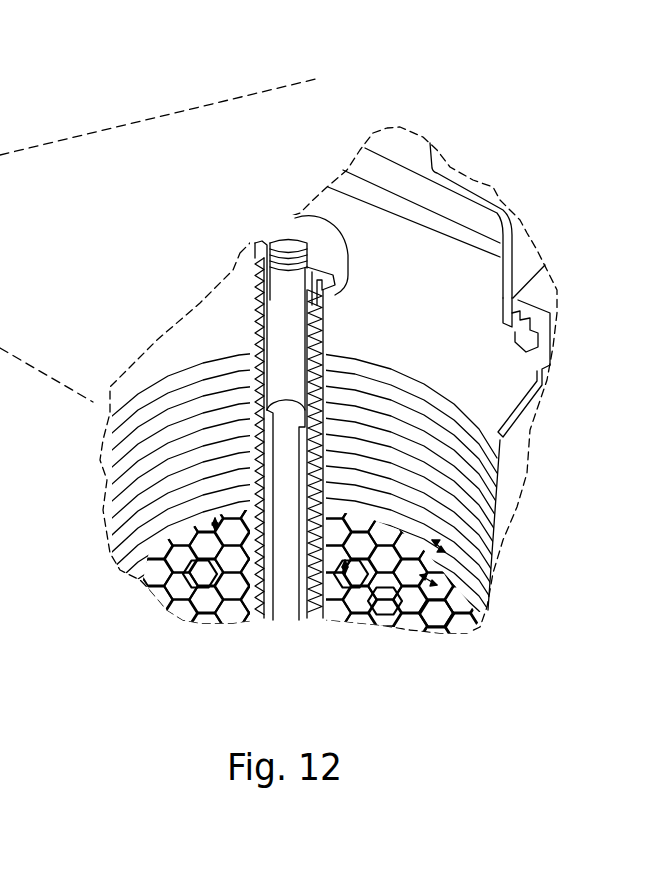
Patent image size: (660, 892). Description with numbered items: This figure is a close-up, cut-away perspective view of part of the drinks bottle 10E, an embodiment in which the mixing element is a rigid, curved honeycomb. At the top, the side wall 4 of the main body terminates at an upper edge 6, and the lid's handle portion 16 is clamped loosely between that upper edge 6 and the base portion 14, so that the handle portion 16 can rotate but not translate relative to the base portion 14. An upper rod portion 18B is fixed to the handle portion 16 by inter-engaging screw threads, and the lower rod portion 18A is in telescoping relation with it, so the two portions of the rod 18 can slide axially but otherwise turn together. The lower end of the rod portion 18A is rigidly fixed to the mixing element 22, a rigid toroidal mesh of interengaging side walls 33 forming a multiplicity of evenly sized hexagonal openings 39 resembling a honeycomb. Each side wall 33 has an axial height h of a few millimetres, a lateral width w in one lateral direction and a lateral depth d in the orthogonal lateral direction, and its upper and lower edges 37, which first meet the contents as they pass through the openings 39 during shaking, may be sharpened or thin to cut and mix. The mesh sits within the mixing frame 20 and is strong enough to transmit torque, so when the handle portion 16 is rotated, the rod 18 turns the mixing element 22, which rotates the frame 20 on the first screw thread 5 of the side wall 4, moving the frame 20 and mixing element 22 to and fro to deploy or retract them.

The drinks bottle 10E is at (532, 172).
The handle portion 16 is at (520, 235).
The upper edge 6 is at (432, 205).
The rod 18 is at (443, 347).
The lower rod portion 18A is at (288, 482).
The upper rod portion 18B is at (307, 338).
The base portion 14 is at (548, 328).
The side wall 4 is at (515, 448).
The first screw thread 5 is at (468, 490).
The mixing frame 20 is at (453, 588).
The mixing element 22 is at (233, 625).
The side walls 33 is at (193, 580).
The upper and lower edges 37 is at (388, 603).
The openings 39 is at (450, 617).
The axial height h is at (215, 522).
The lateral depth d is at (440, 550).
The lateral width w is at (453, 617).